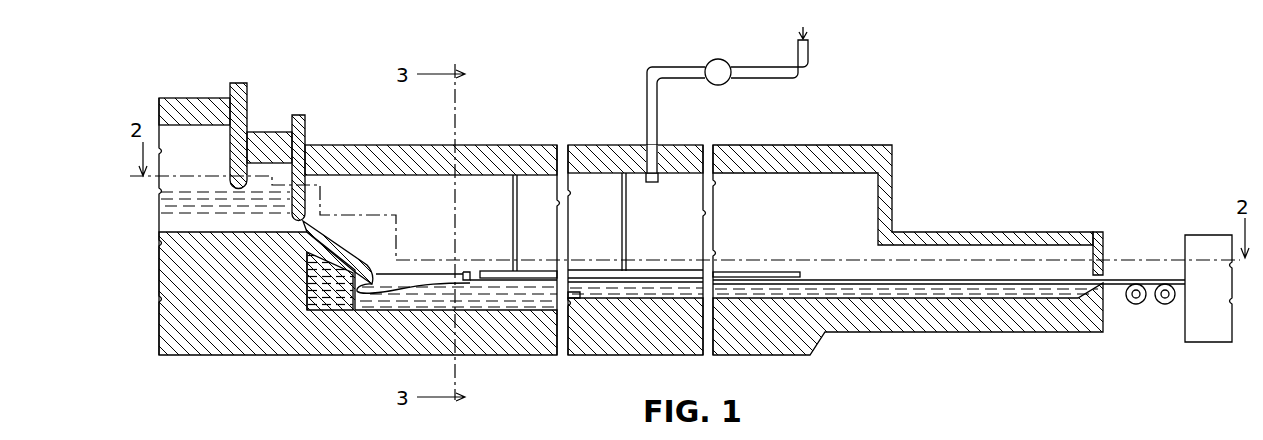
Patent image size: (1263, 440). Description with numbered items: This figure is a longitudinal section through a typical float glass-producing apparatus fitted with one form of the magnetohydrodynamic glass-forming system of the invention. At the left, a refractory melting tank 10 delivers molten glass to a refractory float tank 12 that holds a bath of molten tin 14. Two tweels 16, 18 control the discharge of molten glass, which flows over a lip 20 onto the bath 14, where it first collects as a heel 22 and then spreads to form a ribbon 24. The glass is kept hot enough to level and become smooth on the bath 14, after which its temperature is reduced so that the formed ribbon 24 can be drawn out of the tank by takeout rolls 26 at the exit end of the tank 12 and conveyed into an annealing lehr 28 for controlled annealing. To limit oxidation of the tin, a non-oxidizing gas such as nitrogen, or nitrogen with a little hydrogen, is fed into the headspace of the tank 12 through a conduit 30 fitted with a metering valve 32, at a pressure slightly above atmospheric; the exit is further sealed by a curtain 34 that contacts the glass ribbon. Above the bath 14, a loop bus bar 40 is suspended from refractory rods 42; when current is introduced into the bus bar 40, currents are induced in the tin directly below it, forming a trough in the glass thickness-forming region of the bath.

The refractory melting tank 10 is at (237, 348).
The refractory float tank 12 is at (522, 350).
The bath of molten tin 14 is at (597, 290).
The tweel 16 is at (247, 95).
The tweel 18 is at (294, 121).
The lip 20 is at (331, 252).
The heel 22 is at (378, 278).
The ribbon 24 is at (845, 280).
The takeout rolls 26 is at (1157, 302).
The annealing lehr 28 is at (1190, 243).
The conduit 30 is at (658, 113).
The metering valve 32 is at (722, 84).
The curtain 34 is at (1105, 268).
The loop bus bar 40 is at (496, 271).
The refractory rods 42 is at (513, 218).